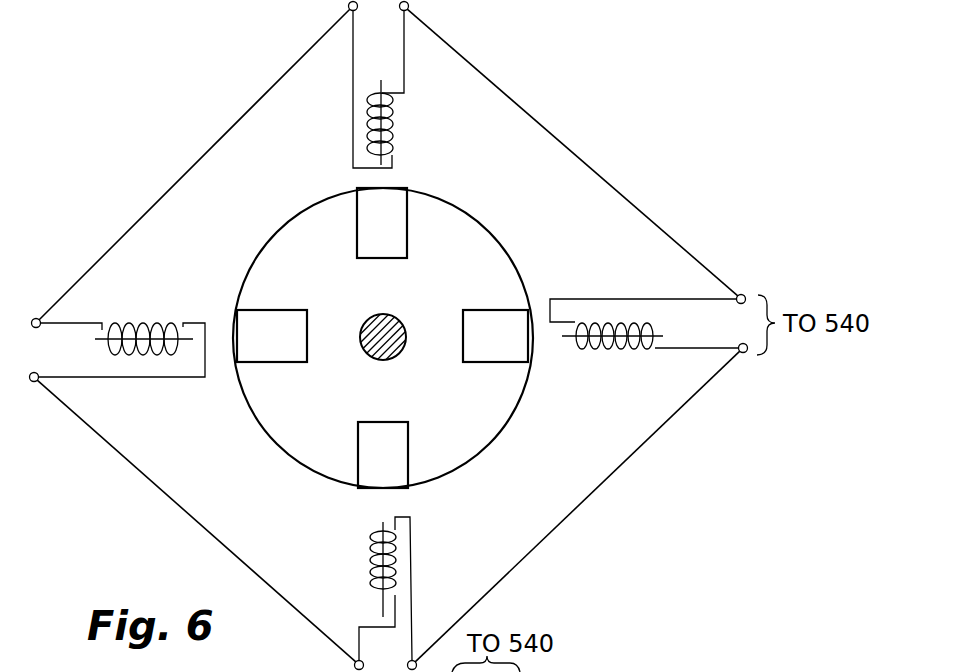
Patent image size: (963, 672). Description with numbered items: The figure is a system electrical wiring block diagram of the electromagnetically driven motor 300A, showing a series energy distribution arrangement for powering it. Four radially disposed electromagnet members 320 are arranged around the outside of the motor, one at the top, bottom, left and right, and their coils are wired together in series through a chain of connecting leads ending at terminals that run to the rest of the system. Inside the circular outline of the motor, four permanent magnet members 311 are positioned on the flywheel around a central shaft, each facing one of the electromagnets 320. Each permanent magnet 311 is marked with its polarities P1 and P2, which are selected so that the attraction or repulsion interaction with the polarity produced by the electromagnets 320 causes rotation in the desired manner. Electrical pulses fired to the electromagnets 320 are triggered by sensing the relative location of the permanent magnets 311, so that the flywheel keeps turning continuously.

The electromagnetically driven motor 300A is at (414, 338).
The permanent magnet member 311 is at (370, 236).
The electromagnet member 320 is at (392, 117).
The polarity P1 is at (407, 188).
The polarity P2 is at (410, 258).